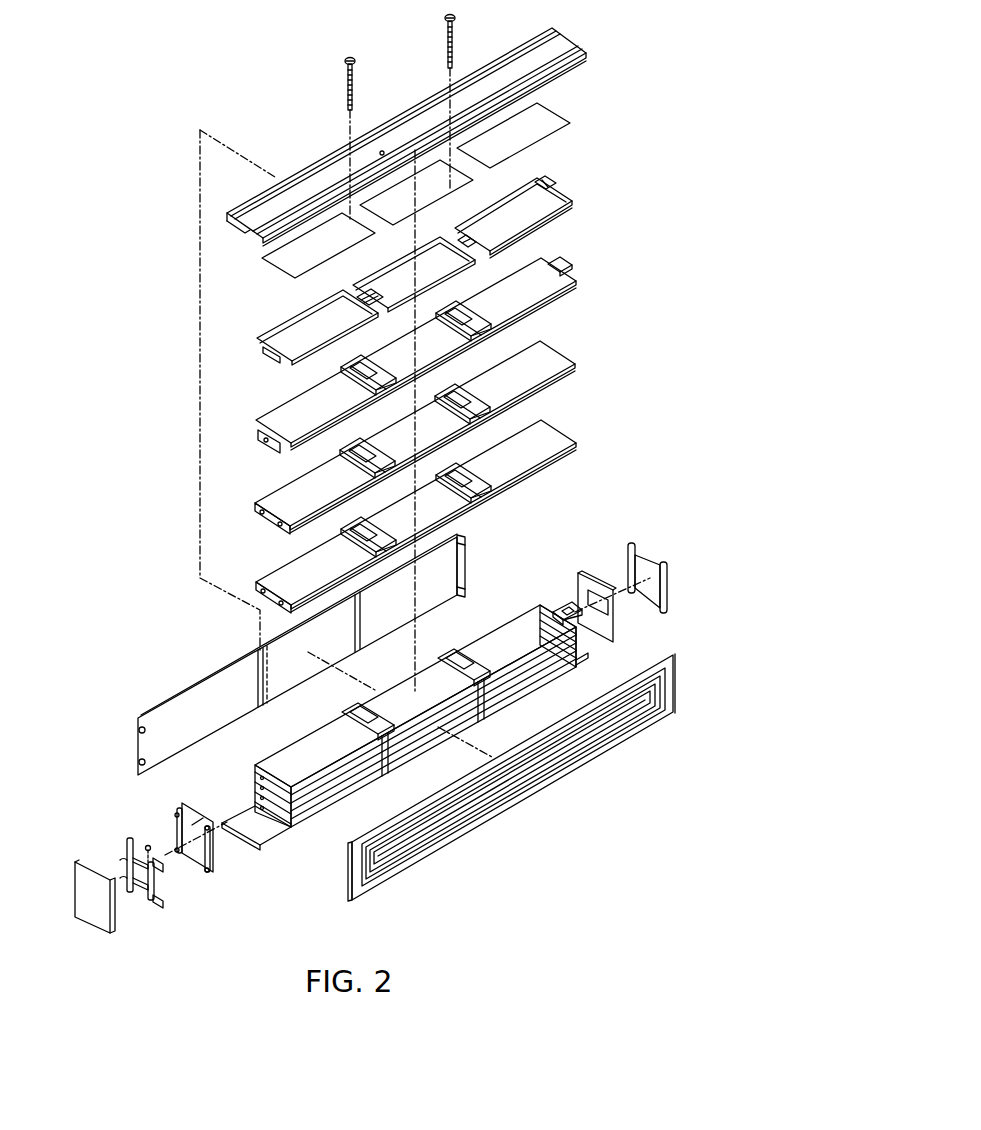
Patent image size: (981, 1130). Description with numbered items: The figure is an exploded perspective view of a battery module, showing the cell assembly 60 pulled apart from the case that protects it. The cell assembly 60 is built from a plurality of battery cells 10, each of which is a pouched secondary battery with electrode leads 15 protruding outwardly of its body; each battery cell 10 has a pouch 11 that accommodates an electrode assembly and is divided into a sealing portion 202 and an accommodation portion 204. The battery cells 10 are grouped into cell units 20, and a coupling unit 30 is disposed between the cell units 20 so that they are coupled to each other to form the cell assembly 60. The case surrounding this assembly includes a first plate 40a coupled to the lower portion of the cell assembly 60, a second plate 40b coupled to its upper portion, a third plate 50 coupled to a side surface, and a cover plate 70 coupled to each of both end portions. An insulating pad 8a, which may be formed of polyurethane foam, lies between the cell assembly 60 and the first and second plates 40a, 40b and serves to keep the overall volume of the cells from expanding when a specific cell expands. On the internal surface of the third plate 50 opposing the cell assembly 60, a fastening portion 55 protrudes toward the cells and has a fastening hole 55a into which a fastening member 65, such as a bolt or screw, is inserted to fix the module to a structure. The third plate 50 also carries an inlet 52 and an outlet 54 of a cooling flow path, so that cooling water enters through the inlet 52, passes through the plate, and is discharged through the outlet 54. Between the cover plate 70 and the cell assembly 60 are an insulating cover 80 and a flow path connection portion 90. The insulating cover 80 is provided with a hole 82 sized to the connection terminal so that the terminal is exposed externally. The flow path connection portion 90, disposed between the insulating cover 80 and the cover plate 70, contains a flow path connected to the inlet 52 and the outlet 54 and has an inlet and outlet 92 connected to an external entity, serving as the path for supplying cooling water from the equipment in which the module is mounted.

The fastening member 65 is at (348, 97).
The second plate 40b is at (572, 50).
The insulating pad 8a is at (553, 118).
The battery cell 10 is at (447, 254).
The pouch 11 is at (512, 188).
The sealing portion 202 is at (576, 207).
The accommodation portion 204 is at (550, 189).
The electrode leads 15 is at (478, 238).
The coupling unit 30 is at (578, 345).
The cell unit 20 is at (582, 428).
The first plate 40a is at (258, 828).
The third plate 50 is at (367, 719).
The fastening portion 55 is at (257, 683).
The fastening hole 55a is at (262, 656).
The inlet 52 is at (140, 728).
The outlet 54 is at (137, 760).
The cell assembly 60 is at (552, 598).
The hole 82 is at (608, 605).
The cover plate 70 is at (96, 910).
The flow path connection portion 90 is at (114, 844).
The inlet and outlet 92 is at (147, 846).
The insulating cover 80 is at (185, 853).